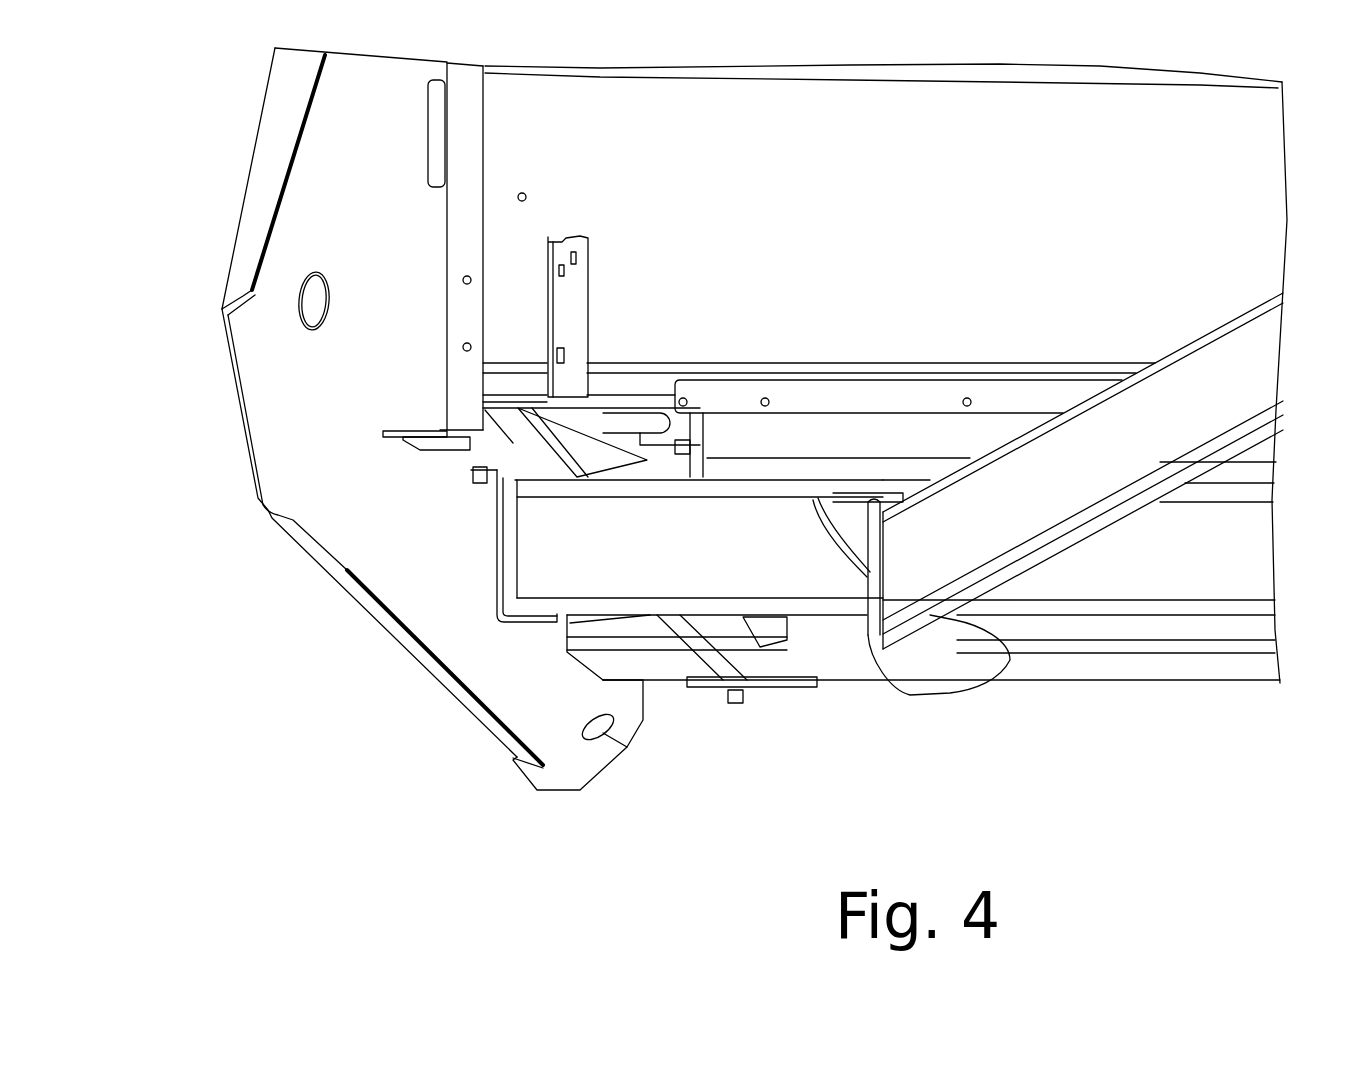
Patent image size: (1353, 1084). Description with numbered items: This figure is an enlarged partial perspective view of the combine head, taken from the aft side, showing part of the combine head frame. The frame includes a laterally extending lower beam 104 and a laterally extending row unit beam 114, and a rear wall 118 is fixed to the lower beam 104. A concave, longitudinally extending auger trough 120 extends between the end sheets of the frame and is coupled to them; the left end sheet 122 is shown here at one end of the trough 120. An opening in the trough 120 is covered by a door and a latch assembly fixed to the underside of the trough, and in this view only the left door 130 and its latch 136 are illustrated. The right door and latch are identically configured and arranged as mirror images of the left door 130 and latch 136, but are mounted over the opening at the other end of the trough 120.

The lower beam 104 is at (735, 565).
The row unit beam 114 is at (1012, 628).
The rear wall 118 is at (852, 191).
The auger trough 120 is at (830, 440).
The left end sheet 122 is at (262, 198).
The left door 130 is at (575, 425).
The latch 136 is at (717, 397).